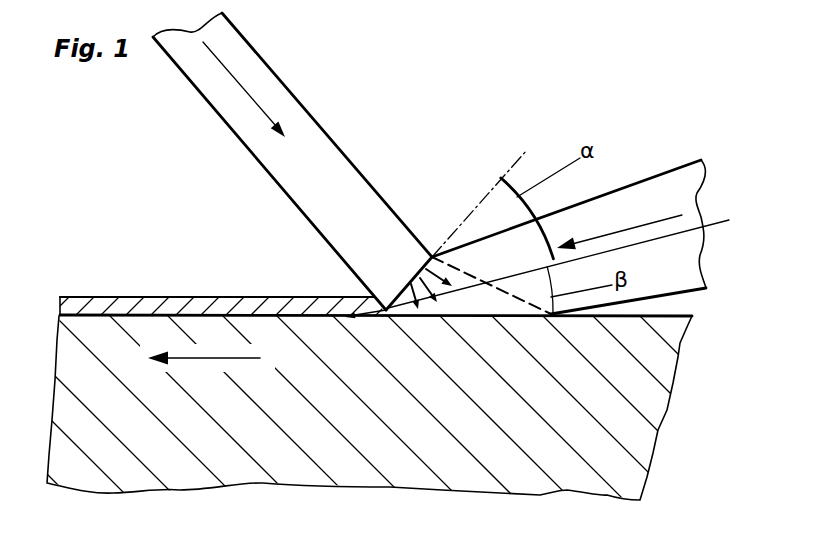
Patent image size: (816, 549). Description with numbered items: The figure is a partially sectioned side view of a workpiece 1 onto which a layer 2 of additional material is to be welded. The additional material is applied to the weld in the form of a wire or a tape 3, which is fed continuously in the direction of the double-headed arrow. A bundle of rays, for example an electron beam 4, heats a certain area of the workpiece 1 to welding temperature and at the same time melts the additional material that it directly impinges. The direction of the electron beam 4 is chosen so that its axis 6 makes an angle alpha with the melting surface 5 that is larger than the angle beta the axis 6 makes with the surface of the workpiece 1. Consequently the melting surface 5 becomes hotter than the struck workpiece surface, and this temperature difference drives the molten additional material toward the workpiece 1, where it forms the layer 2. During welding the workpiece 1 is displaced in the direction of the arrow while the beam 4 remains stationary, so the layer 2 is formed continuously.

The workpiece 1 is at (642, 447).
The layer 2 is at (171, 312).
The wire or tape 3 is at (293, 122).
The electron beam 4 is at (651, 193).
The melting surface 5 is at (413, 280).
The axis 6 is at (679, 233).